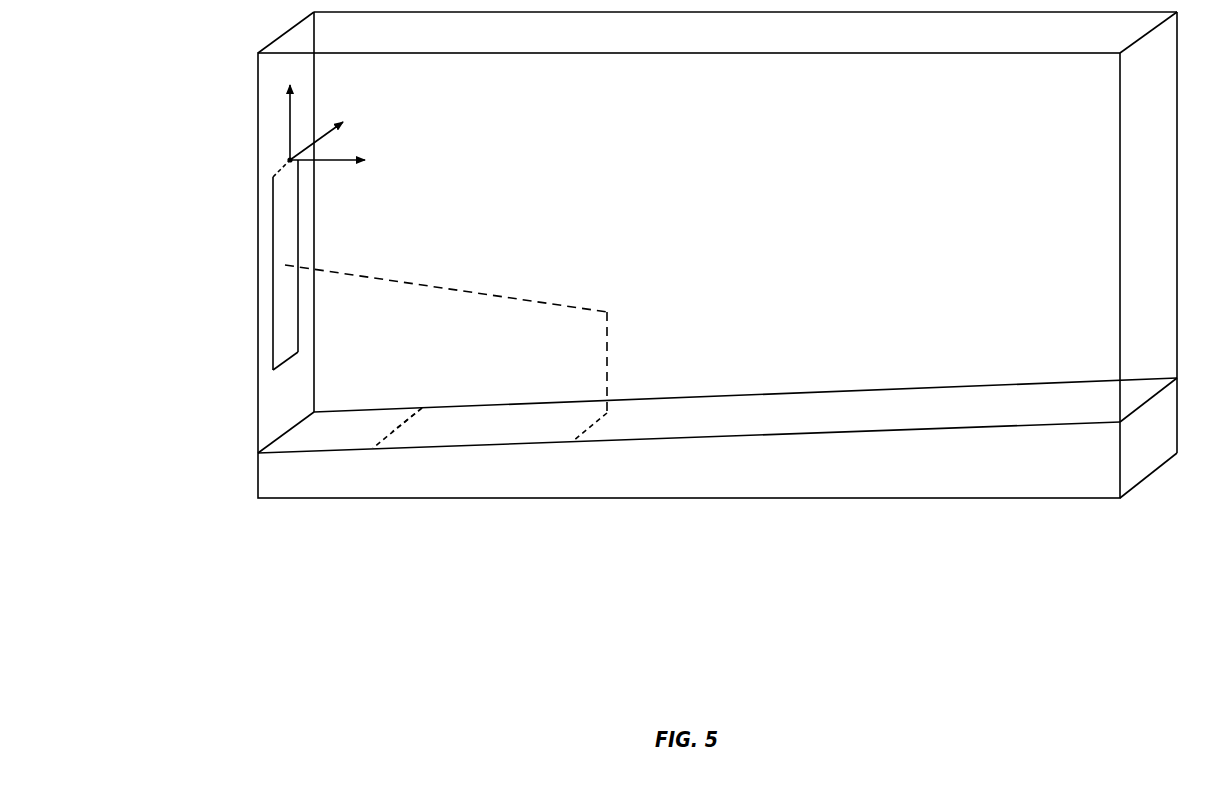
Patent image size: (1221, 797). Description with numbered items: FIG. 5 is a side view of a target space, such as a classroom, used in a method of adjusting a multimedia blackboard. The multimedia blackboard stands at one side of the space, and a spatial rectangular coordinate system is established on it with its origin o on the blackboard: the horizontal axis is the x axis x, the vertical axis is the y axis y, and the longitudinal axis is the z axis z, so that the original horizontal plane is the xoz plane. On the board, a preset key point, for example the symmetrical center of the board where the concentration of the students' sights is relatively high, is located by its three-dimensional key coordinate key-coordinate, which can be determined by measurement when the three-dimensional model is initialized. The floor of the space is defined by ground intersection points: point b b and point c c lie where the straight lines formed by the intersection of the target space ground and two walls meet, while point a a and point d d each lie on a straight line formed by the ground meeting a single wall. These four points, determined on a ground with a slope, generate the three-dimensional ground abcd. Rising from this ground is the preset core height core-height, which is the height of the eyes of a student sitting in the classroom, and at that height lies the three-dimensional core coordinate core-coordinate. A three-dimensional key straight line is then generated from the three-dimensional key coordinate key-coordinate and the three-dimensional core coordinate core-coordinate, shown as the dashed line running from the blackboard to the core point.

The point a is at (413, 405).
The point b is at (757, 394).
The point c is at (689, 435).
The point d is at (340, 444).
The origin o is at (282, 147).
The x axis x is at (322, 128).
The y axis y is at (300, 118).
The z axis z is at (336, 159).
The three-dimensional key coordinate key-coordinate is at (287, 263).
The preset core height core-height is at (609, 364).
The three-dimensional core coordinate core-coordinate is at (609, 313).